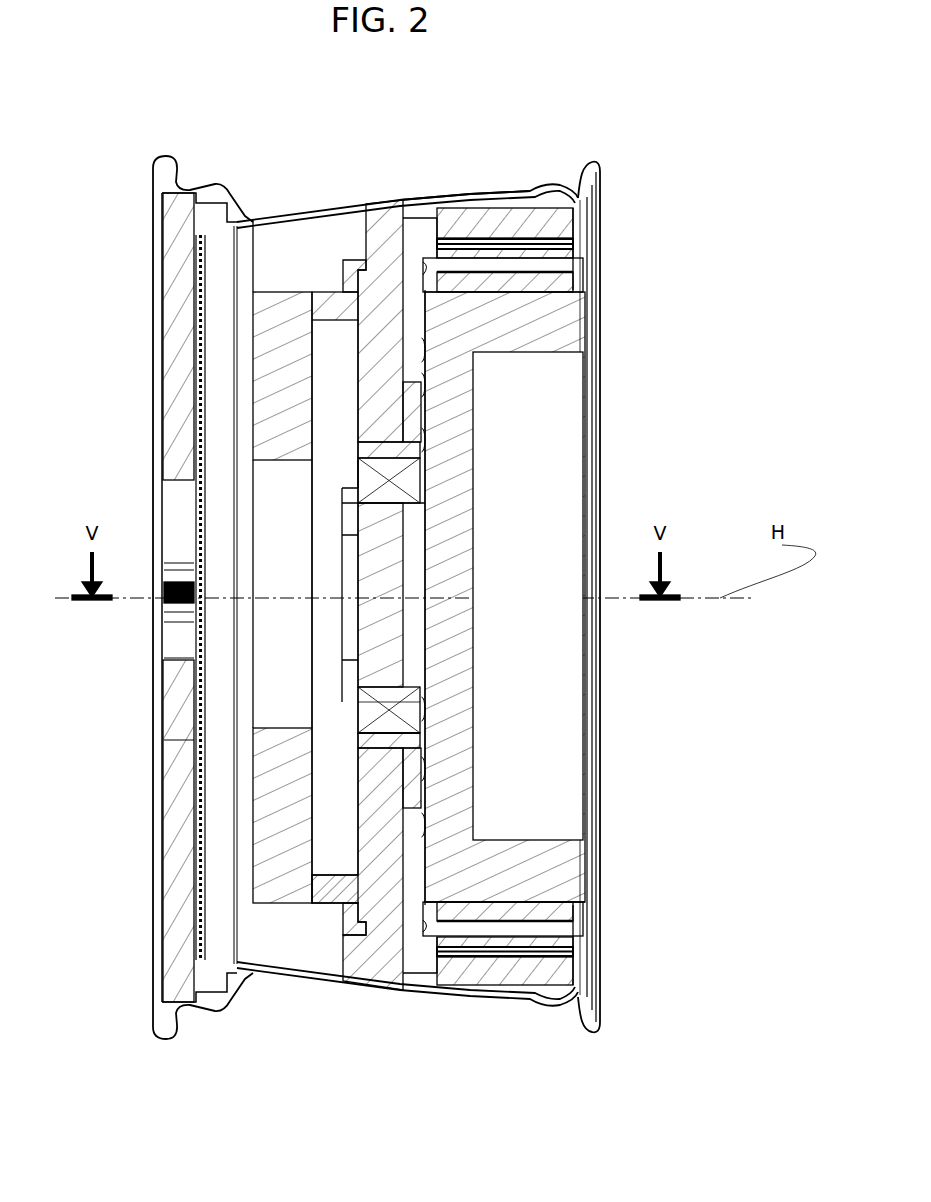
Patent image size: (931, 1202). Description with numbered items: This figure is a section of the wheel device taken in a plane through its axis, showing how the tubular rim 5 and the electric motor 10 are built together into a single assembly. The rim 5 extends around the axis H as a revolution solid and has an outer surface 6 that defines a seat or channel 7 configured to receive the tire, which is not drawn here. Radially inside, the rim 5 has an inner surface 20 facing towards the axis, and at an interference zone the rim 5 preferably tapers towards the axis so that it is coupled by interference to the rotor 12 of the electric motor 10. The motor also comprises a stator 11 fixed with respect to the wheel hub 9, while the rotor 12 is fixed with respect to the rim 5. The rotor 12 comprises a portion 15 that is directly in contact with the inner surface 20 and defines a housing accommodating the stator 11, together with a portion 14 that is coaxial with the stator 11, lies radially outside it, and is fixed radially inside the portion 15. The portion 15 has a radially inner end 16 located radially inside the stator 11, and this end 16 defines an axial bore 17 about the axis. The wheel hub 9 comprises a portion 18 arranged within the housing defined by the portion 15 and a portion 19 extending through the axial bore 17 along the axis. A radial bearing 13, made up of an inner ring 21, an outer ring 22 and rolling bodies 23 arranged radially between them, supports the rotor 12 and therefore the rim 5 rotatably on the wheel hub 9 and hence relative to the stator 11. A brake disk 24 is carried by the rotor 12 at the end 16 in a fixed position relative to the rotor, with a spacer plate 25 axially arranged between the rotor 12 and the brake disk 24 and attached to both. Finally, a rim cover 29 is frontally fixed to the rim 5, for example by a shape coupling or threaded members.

The rim 5 is at (270, 212).
The outer surface 6 is at (431, 186).
The seat or channel 7 is at (576, 191).
The wheel hub 9 is at (515, 325).
The electric motor 10 is at (592, 241).
The stator 11 is at (600, 288).
The rotor 12 is at (387, 246).
The radial bearing 13 is at (349, 469).
The portion 14 is at (500, 222).
The portion 15 is at (408, 232).
The radially inner end 16 is at (392, 421).
The axial bore 17 is at (360, 730).
The portion 18 is at (525, 860).
The portion 19 is at (405, 612).
The inner surface 20 is at (304, 226).
The inner ring 21 is at (404, 500).
The outer ring 22 is at (412, 448).
The rolling bodies 23 is at (357, 482).
The brake disk 24 is at (312, 888).
The spacer plate 25 is at (328, 890).
The rim cover 29 is at (175, 265).